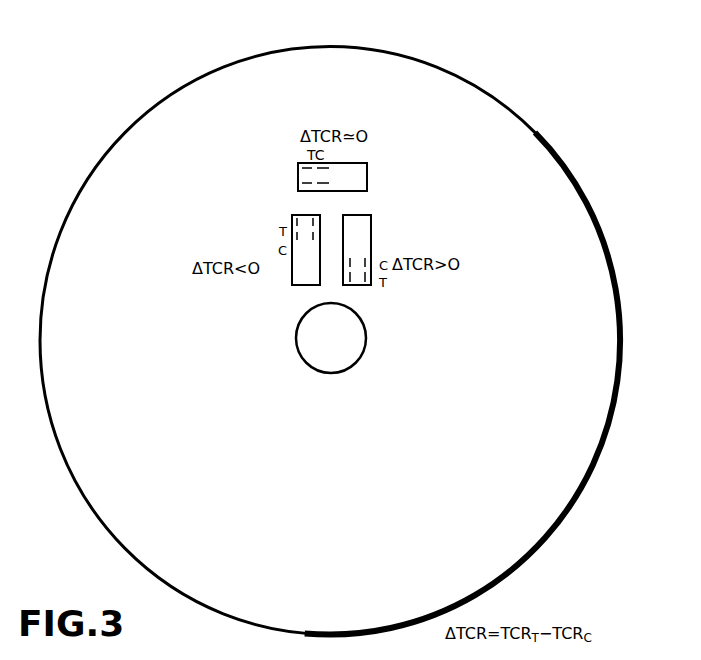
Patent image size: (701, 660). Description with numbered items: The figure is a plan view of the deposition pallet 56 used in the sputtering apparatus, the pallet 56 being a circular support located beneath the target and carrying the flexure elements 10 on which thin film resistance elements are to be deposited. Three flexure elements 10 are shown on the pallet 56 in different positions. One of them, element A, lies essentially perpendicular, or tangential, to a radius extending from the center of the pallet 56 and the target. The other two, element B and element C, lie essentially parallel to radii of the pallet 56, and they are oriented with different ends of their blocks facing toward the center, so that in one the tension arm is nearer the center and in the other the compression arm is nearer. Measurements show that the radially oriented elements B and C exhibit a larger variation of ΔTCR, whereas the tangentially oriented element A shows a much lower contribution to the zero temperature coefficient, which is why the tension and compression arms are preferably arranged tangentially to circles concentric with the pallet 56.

The flexure element 10 is at (336, 240).
The deposition pallet 56 is at (477, 107).
The element A is at (332, 177).
The element B is at (306, 250).
The element C is at (357, 250).